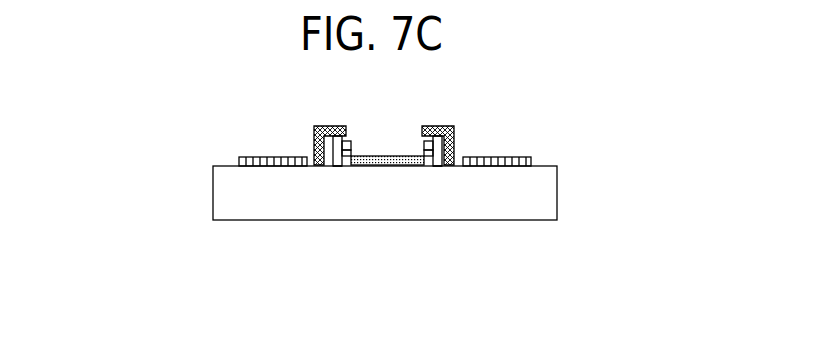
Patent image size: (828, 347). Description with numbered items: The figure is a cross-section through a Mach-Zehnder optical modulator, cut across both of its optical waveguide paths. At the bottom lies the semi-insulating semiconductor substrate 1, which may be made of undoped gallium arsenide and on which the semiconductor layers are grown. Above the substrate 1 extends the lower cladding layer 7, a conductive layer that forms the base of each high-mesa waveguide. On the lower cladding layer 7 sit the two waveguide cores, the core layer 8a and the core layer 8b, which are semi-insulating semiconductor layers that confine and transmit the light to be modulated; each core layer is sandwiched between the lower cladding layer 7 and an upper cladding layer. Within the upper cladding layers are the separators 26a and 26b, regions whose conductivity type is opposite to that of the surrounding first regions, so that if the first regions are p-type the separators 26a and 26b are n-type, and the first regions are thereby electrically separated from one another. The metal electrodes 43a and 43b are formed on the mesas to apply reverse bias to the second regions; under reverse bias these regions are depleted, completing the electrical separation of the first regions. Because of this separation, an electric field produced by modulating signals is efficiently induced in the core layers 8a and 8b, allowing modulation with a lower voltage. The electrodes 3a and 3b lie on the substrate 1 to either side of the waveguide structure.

The semi-insulating semiconductor substrate 1 is at (528, 203).
The electrode 3a is at (263, 158).
The electrode 3b is at (507, 158).
The lower cladding layer 7 is at (384, 166).
The core layer 8a is at (343, 167).
The core layer 8b is at (430, 167).
The separator 26a is at (348, 143).
The separator 26b is at (421, 143).
The metal electrode 43a is at (341, 127).
The metal electrode 43b is at (427, 127).